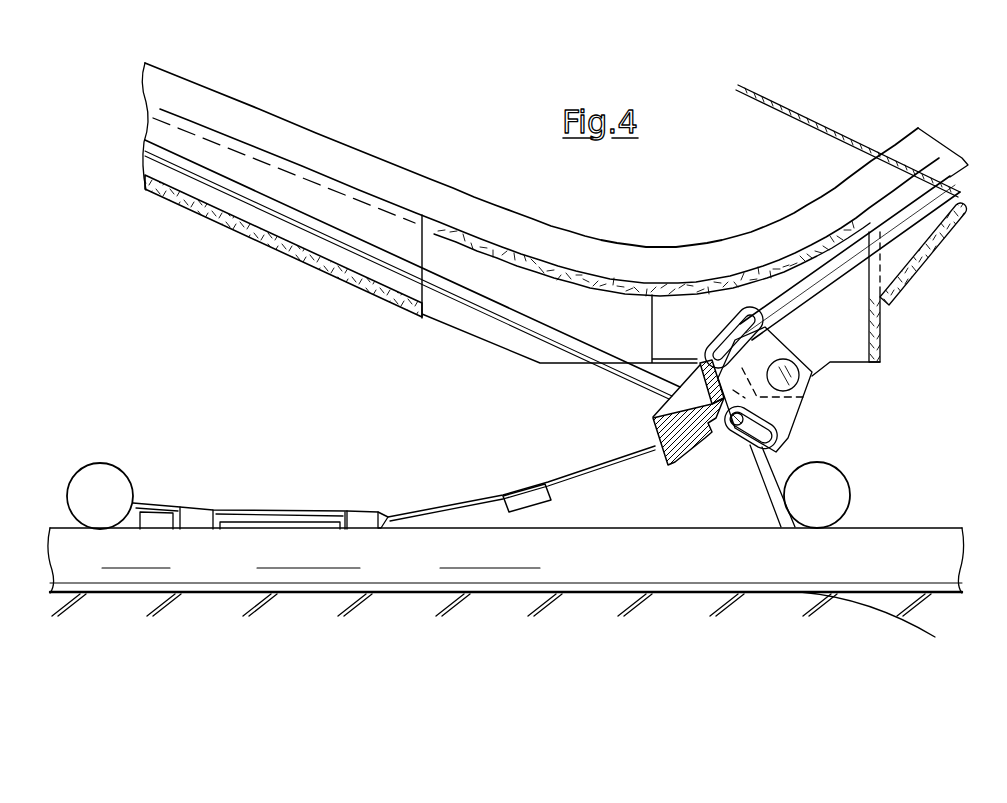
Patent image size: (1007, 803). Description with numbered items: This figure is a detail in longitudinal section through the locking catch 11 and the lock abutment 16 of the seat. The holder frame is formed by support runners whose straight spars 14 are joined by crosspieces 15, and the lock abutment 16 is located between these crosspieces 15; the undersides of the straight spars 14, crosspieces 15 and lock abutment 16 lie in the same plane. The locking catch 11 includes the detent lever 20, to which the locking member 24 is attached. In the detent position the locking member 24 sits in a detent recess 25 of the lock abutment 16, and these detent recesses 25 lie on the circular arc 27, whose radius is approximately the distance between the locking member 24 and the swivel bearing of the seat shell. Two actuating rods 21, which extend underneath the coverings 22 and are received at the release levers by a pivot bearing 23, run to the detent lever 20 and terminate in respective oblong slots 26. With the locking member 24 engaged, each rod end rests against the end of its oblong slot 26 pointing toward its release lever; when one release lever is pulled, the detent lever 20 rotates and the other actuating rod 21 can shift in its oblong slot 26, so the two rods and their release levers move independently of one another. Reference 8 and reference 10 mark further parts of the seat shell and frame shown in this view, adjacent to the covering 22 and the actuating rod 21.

The wall 8 is at (209, 93).
The wall end guide 10 is at (906, 194).
The locking catch 11 is at (660, 404).
The straight spar 14 is at (868, 540).
The crosspiece 15 is at (125, 497).
The lock abutment 16 is at (697, 522).
The detent lever 20 is at (793, 416).
The actuating rod 21 is at (365, 250).
The covering 22 is at (205, 213).
The pivot bearing 23 is at (794, 381).
The locking member 24 is at (657, 429).
The detent recess 25 is at (533, 488).
The oblong slot 26 is at (722, 348).
The circular arc 27 is at (355, 510).